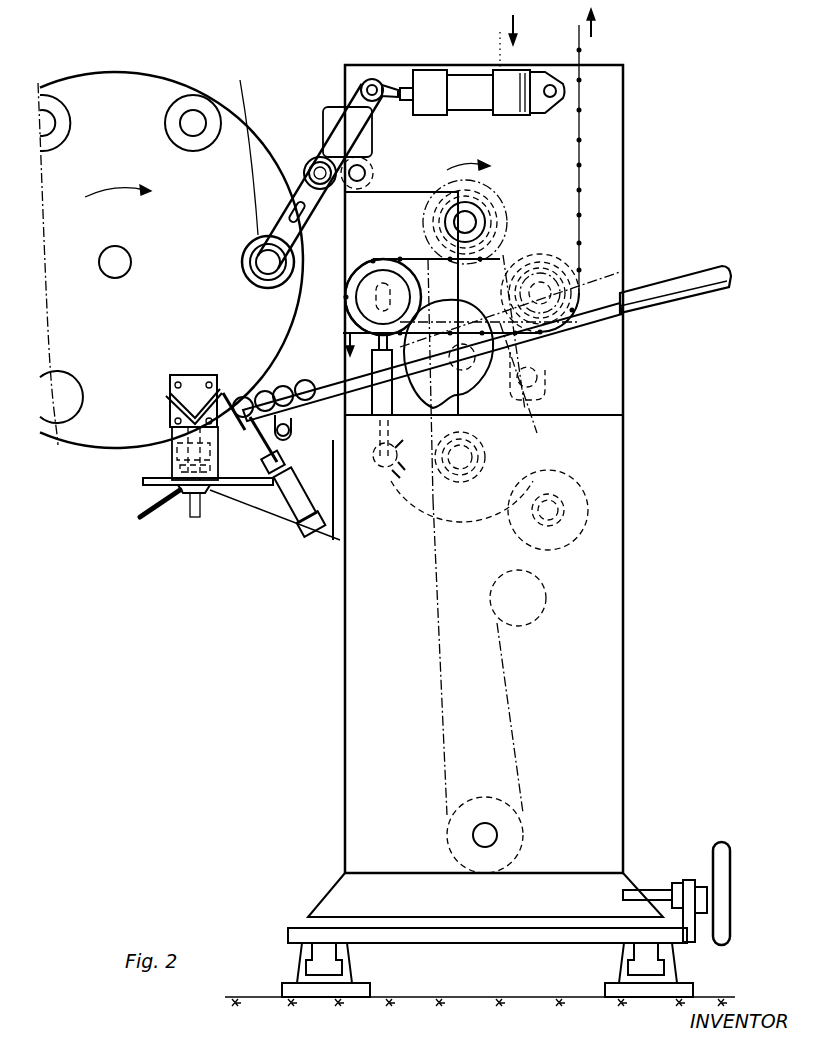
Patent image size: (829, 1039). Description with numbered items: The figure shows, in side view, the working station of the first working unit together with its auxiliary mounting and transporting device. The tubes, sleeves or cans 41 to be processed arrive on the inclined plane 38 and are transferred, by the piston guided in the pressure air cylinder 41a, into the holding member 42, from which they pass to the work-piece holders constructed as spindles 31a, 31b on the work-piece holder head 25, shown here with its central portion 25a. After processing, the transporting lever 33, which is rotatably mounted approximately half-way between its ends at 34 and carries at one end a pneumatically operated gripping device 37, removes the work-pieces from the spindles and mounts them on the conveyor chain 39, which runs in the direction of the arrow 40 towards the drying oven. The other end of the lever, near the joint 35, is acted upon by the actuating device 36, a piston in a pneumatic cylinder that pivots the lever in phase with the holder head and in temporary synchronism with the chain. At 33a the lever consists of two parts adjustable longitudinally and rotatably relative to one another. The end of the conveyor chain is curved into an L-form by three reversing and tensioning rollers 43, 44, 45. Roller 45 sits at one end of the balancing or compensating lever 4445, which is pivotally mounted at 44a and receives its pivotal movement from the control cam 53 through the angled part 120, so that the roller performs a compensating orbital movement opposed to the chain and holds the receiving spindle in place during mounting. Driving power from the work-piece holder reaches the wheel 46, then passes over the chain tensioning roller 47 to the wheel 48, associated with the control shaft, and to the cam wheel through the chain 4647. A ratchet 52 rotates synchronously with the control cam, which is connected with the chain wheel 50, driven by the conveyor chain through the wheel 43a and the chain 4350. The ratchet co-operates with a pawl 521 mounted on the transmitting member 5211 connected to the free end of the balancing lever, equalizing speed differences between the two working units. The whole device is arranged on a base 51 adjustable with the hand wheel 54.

The work-piece holder head 25 is at (131, 85).
The reel hub 25a is at (115, 280).
The spindle 31a is at (193, 105).
The spindle 31b is at (252, 147).
The transporting lever 33 is at (346, 132).
The two-part connection of transporting lever 33a is at (297, 220).
The pivot of transporting lever 34 is at (316, 164).
The lever pivot 35 is at (373, 80).
The actuating device 36 is at (462, 90).
The gripping device 37 is at (257, 272).
The inclined plane 38 is at (686, 290).
The conveyor chain 39 is at (580, 62).
The arrow 40 is at (604, 23).
The tubes, sleeves or cans 41 is at (306, 382).
The pressure air cylinder 41a is at (295, 517).
The holding member 42 is at (172, 432).
The reversing and tensioning roller 43 is at (465, 200).
The wheel 43a is at (490, 195).
The reversing and tensioning roller 44 is at (550, 257).
The pivot of balancing lever 44a is at (540, 283).
The reversing and tensioning roller 45 is at (375, 258).
The wheel 46 is at (520, 830).
The chain tensioning roller 47 is at (538, 605).
The wheel 48 is at (588, 503).
The chain wheel 50 is at (435, 505).
The base 51 is at (328, 925).
The ratchet 52 is at (402, 480).
The control cam 53 is at (512, 389).
The hand wheel 54 is at (722, 856).
The angled part 120 is at (520, 352).
The pawl 521 is at (333, 545).
The transmitting member 5211 is at (385, 432).
The chain 4350 is at (523, 437).
The balancing or compensating lever 4445 is at (428, 265).
The chain 4647 is at (507, 712).